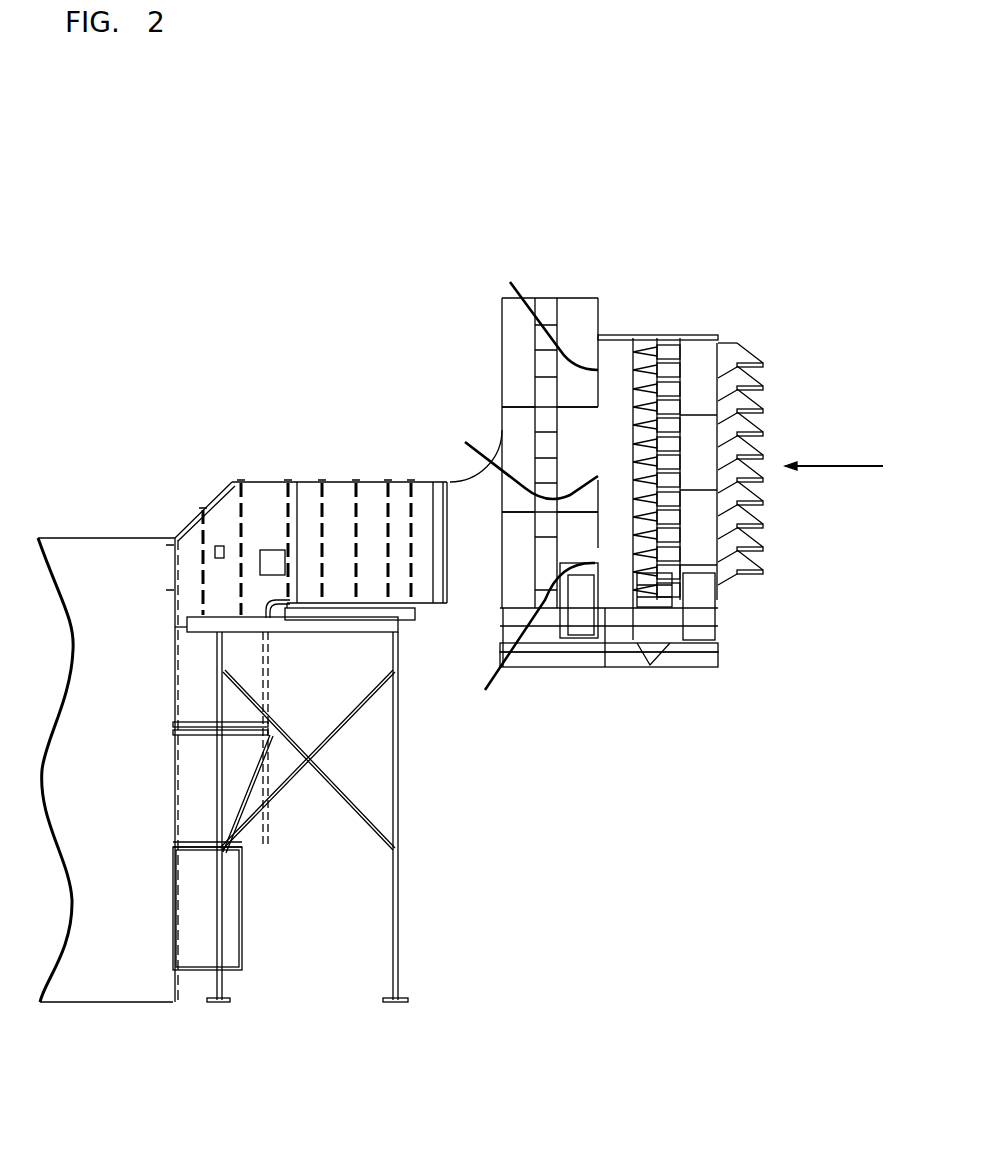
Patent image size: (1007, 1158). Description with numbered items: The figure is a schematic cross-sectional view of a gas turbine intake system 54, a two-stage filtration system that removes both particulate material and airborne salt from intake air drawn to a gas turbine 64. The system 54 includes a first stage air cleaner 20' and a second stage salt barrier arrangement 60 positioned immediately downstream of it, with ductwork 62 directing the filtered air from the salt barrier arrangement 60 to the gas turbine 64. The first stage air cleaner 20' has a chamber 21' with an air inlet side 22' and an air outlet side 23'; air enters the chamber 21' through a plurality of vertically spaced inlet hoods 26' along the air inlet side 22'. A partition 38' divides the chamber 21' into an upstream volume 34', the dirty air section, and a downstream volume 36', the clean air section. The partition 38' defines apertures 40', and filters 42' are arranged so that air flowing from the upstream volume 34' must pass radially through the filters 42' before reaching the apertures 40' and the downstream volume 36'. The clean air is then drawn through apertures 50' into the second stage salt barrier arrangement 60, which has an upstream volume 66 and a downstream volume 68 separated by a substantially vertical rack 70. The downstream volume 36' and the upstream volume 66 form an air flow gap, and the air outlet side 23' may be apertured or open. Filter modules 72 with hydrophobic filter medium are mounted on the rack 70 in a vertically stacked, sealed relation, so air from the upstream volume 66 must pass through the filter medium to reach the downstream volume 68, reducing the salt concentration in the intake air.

The first stage air cleaner 20' is at (679, 431).
The chamber 21' is at (679, 300).
The air inlet side 22' is at (832, 432).
The air outlet side 23' is at (601, 314).
The inlet hoods 26' is at (773, 448).
The upstream volume 34' is at (699, 469).
The downstream volume 36' is at (614, 485).
The partition 38' is at (636, 422).
The apertures 40' is at (608, 633).
The filters 42' is at (765, 586).
The apertures 50' is at (516, 488).
The gas turbine intake system 54 is at (458, 218).
The second stage salt barrier arrangement 60 is at (558, 298).
The ductwork 62 is at (261, 481).
The gas turbine 64 is at (88, 536).
The upstream volume 66 is at (566, 473).
The downstream volume 68 is at (506, 473).
The rack 70 is at (535, 352).
The filter modules 72 is at (537, 388).